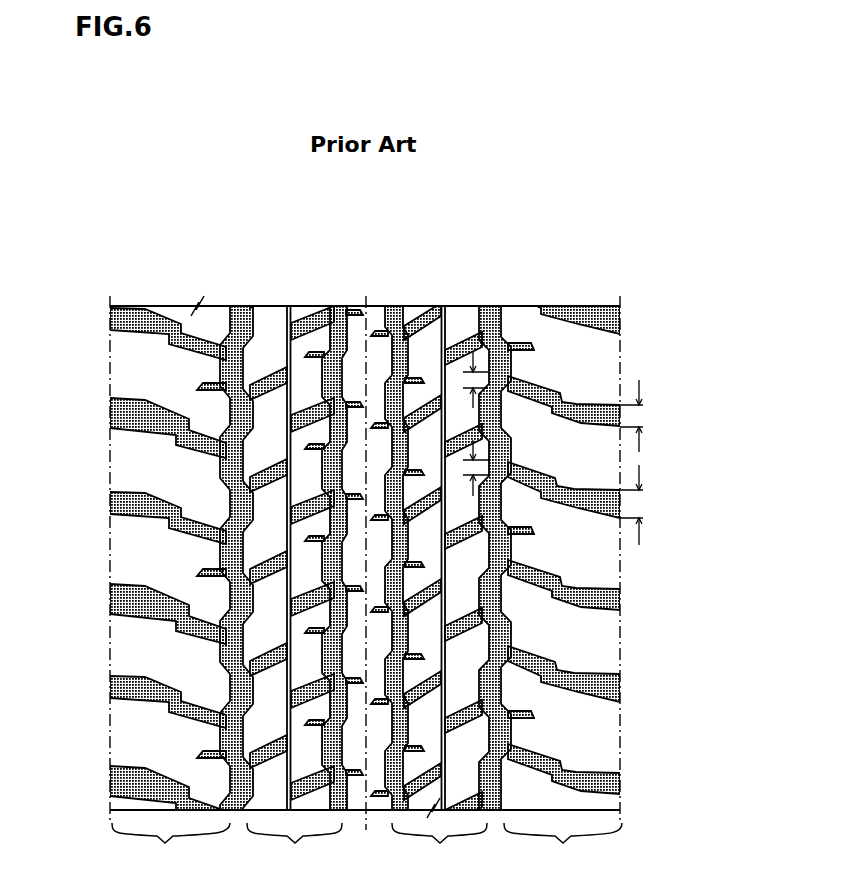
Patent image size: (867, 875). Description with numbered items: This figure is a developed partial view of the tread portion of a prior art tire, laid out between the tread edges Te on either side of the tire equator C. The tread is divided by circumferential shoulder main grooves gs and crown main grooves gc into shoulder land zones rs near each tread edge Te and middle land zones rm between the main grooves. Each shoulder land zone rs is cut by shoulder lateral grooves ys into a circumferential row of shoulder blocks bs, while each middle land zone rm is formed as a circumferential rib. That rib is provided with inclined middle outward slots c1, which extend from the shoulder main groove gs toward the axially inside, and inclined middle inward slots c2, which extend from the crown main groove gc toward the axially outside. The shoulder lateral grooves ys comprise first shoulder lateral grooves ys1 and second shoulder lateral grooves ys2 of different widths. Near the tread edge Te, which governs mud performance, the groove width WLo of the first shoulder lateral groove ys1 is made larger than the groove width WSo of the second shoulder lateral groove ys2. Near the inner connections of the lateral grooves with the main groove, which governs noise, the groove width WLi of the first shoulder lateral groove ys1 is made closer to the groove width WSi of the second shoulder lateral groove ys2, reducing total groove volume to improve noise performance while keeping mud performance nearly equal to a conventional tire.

The tread edge Te is at (108, 347).
The tire equator (center line) C is at (363, 551).
The inclined middle outward slot c1 is at (264, 380).
The inclined middle inward slot c2 is at (308, 325).
The shoulder main groove gs is at (365, 558).
The crown main groove gc is at (364, 558).
The shoulder land zone rs is at (366, 589).
The middle land zone rm is at (367, 572).
The shoulder lateral groove ys is at (629, 536).
The first shoulder lateral groove ys1 is at (577, 486).
The second shoulder lateral groove ys2 is at (577, 403).
The shoulder block bs is at (582, 368).
The groove width of second shoulder lateral groove near main groove connection WSi is at (473, 372).
The groove width of second shoulder lateral groove near tread edge WSo is at (654, 416).
The groove width of first shoulder lateral groove near main groove connection WLi is at (503, 477).
The groove width of first shoulder lateral groove near tread edge WLo is at (653, 505).